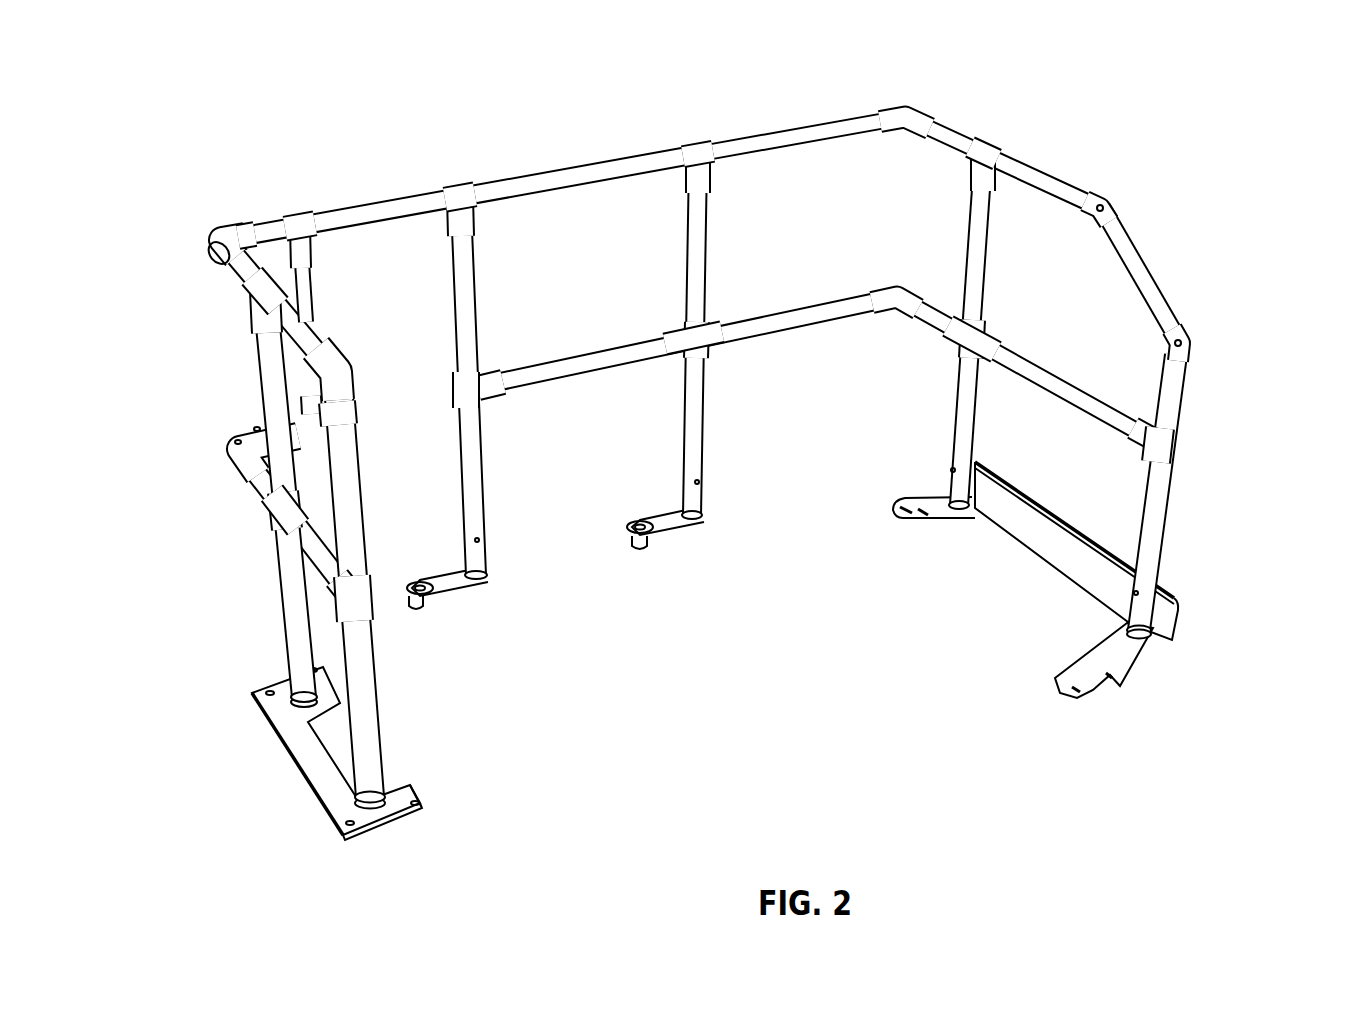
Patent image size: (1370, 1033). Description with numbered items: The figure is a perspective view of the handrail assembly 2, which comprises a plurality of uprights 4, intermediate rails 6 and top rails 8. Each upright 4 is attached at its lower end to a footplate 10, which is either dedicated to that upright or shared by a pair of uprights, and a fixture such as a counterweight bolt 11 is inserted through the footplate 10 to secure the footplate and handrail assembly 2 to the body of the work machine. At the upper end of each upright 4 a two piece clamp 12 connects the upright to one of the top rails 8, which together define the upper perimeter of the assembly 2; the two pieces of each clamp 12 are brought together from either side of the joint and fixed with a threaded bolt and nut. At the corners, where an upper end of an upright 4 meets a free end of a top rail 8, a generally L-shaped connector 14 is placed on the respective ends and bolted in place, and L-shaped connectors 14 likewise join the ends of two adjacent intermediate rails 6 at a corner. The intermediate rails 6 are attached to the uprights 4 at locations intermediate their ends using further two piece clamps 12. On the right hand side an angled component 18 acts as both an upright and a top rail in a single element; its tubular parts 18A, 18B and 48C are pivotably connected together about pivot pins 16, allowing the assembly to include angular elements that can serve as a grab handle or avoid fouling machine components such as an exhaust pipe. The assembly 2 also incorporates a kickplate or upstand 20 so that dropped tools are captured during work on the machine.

The assembly 2 is at (618, 108).
The upright 4 is at (980, 283).
The intermediate rail 6 is at (580, 363).
The top rail 8 is at (367, 217).
The footplate 10 is at (675, 523).
The counterweight bolt 11 is at (415, 610).
The clamp 12 is at (462, 198).
The L-shaped connector 14 is at (905, 115).
The pivot pin 16 is at (1108, 198).
The angled component 18 is at (1218, 366).
The tubular part 18A is at (1050, 183).
The tubular part 18B is at (1155, 275).
The kickplate 20 is at (1058, 543).
The end post 48C is at (1157, 532).